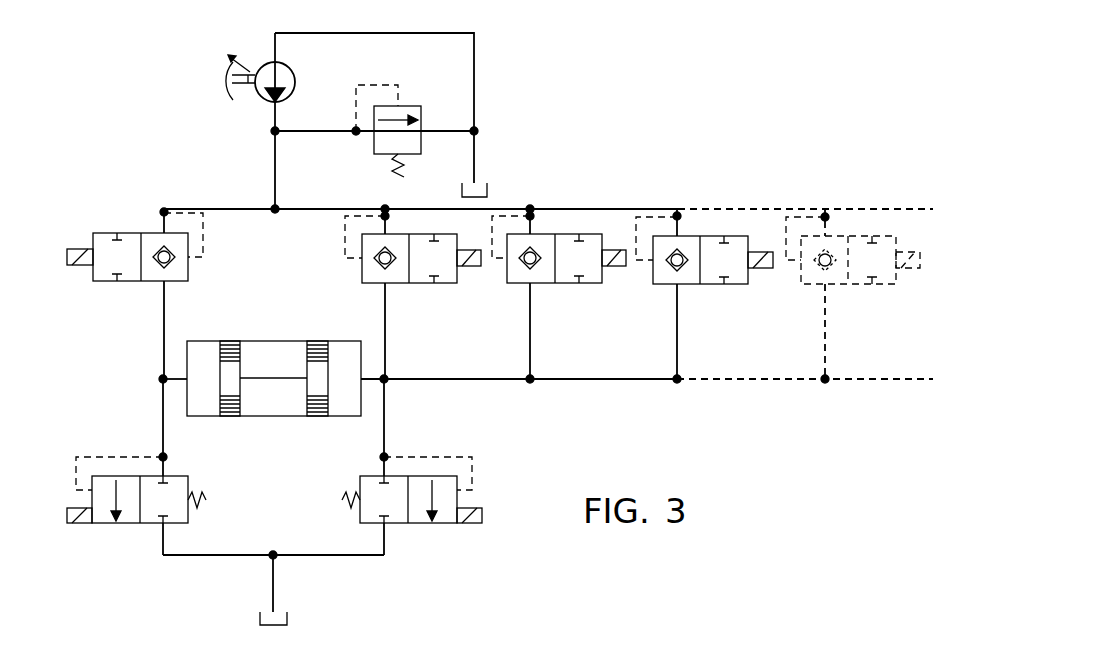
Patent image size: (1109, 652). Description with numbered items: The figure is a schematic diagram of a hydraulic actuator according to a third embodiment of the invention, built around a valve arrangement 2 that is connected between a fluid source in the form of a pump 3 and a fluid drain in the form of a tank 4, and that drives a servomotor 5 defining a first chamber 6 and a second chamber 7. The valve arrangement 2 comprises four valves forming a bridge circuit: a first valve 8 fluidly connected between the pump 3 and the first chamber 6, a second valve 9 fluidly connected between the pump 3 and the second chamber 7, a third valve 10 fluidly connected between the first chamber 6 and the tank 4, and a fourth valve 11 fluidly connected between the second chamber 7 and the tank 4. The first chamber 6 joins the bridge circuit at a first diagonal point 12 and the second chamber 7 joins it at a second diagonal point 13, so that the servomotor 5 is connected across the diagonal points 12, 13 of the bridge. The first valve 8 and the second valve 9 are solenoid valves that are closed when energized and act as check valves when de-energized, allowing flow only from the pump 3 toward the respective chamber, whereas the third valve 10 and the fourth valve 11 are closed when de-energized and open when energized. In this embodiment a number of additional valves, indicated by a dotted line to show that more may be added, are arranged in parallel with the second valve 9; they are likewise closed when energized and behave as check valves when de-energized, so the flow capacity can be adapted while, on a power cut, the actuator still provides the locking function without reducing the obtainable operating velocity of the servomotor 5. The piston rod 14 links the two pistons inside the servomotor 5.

The valve arrangement 2 is at (188, 207).
The pump 3 is at (262, 66).
The tank 4 is at (284, 625).
The servomotor 5 is at (274, 376).
The first chamber 6 is at (203, 360).
The second chamber 7 is at (345, 368).
The first valve 8 is at (127, 232).
The second valve 9 is at (421, 233).
The third valve 10 is at (130, 524).
The fourth valve 11 is at (420, 475).
The first diagonal point 12 is at (161, 377).
The second diagonal point 13 is at (388, 377).
The piston rod 14 is at (262, 375).